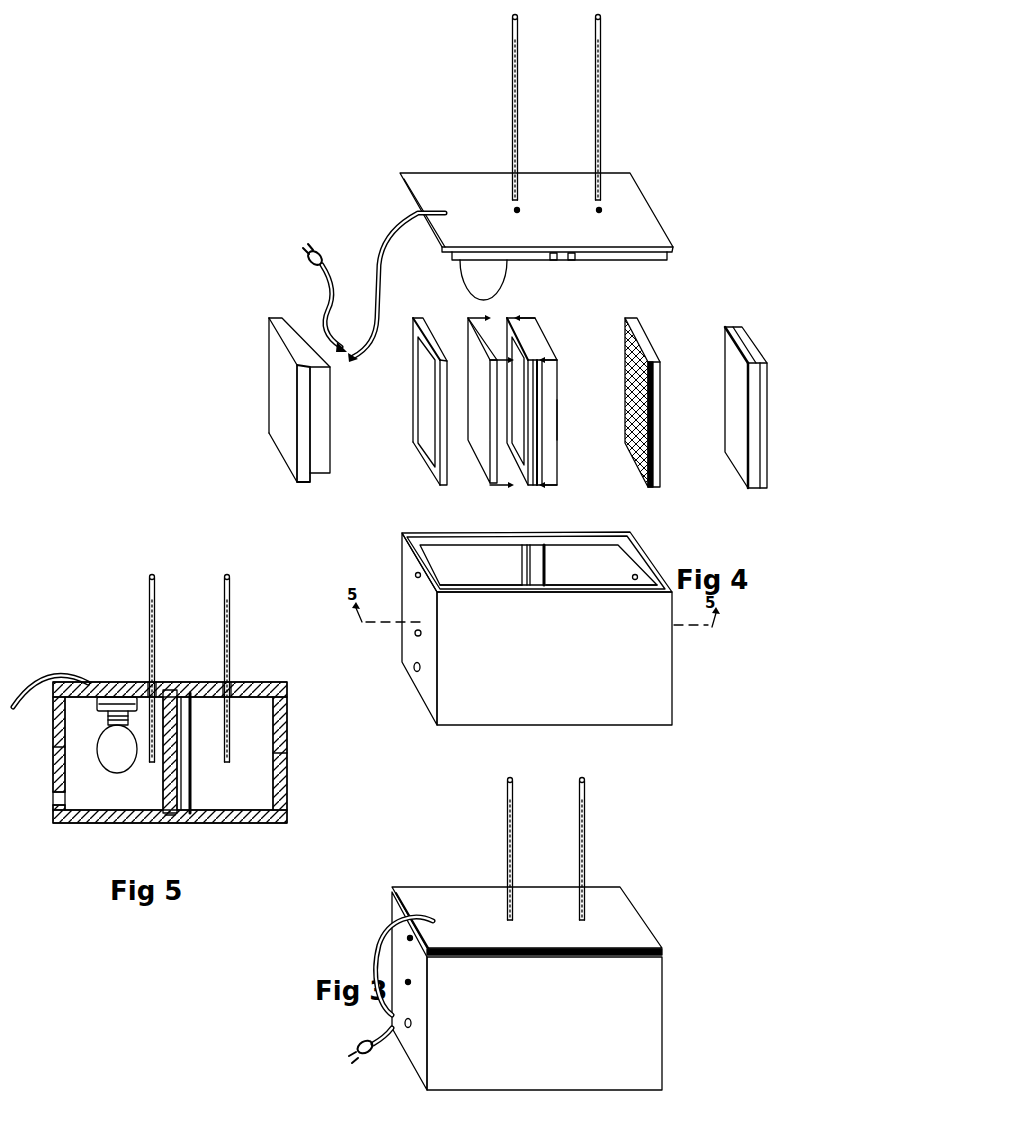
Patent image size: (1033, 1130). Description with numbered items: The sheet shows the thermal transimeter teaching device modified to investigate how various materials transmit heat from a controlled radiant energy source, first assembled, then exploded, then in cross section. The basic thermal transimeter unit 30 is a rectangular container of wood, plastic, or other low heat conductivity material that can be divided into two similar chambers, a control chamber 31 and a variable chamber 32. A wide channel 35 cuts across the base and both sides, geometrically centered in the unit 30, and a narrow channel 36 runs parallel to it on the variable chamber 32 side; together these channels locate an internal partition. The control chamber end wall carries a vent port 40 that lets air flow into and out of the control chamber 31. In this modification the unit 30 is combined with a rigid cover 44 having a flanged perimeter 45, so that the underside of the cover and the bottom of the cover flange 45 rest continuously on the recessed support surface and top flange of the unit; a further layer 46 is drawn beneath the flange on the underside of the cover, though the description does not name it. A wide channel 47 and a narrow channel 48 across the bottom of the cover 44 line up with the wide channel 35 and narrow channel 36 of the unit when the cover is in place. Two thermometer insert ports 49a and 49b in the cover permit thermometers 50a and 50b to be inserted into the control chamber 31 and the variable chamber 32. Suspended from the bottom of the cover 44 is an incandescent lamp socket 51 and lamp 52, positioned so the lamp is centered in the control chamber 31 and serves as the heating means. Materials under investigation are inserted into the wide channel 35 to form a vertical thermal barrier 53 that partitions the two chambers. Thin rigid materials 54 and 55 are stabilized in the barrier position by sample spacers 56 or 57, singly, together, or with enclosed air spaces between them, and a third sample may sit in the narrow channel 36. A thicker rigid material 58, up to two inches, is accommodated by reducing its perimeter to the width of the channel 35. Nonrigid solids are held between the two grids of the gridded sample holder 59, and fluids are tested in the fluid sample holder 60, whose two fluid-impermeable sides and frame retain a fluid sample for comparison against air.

In FIG. 4, the basic thermal transimeter unit 30 is at (540, 732).
In FIG. 5, the basic thermal transimeter unit 30 is at (138, 833).
In FIG. 4, the control chamber 31 is at (437, 559).
In FIG. 5, the control chamber 31 is at (107, 784).
In FIG. 4, the variable chamber 32 is at (600, 568).
In FIG. 5, the variable chamber 32 is at (225, 775).
In FIG. 4, the wide channel 35 is at (547, 586).
In FIG. 4, the narrow channel 36 is at (546, 545).
In FIG. 5, the narrow channel 36 is at (191, 766).
In FIG. 4, the vent port 40 is at (409, 668).
In FIG. 5, the vent port 40 is at (55, 796).
In FIG. 4, the rigid cover 44 is at (630, 212).
In FIG. 5, the rigid cover 44 is at (172, 681).
In FIG. 4, the cover flange 45 is at (673, 252).
In FIG. 4, the cover gasket layer 46 is at (633, 259).
In FIG. 4, the wide channel of cover 47 is at (555, 261).
In FIG. 4, the narrow channel of cover 48 is at (573, 261).
In FIG. 4, the thermometer insert port 49a is at (514, 208).
In FIG. 5, the thermometer insert port 49a is at (148, 681).
In FIG. 4, the thermometer insert port 49b is at (596, 208).
In FIG. 5, the thermometer insert port 49b is at (231, 681).
In FIG. 4, the thermometer 50a is at (511, 42).
In FIG. 5, the thermometer 50a is at (148, 601).
In FIG. 4, the thermometer 50b is at (604, 42).
In FIG. 5, the thermometer 50b is at (232, 598).
In FIG. 5, the incandescent lamp socket 51 is at (114, 708).
In FIG. 4, the lamp 52 is at (458, 272).
In FIG. 5, the lamp 52 is at (106, 756).
In FIG. 5, the vertical thermal barrier 53 is at (172, 823).
In FIG. 4, the rigid material 54 is at (559, 428).
In FIG. 5, the rigid material 54 is at (180, 752).
In FIG. 4, the rigid material 55 is at (493, 487).
In FIG. 4, the sample spacer 56 is at (535, 487).
In FIG. 5, the sample spacer 56 is at (163, 778).
In FIG. 4, the narrow sample spacer 57 is at (439, 487).
In FIG. 4, the rigid material 58 is at (314, 478).
In FIG. 4, the gridded sample holder 59 is at (650, 489).
In FIG. 4, the fluid sample holder 60 is at (752, 490).